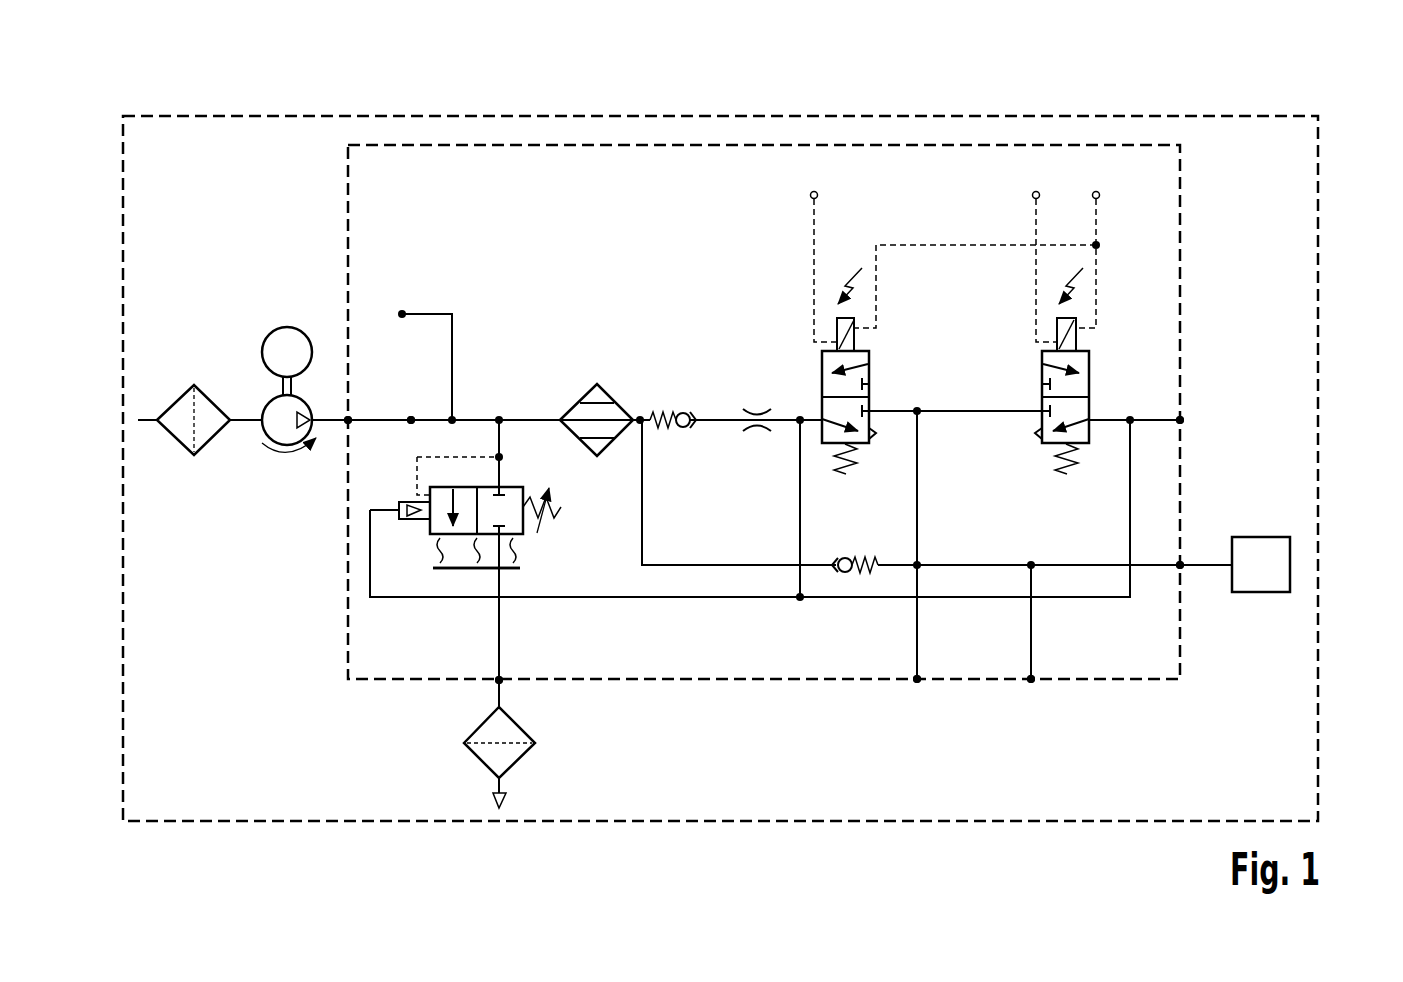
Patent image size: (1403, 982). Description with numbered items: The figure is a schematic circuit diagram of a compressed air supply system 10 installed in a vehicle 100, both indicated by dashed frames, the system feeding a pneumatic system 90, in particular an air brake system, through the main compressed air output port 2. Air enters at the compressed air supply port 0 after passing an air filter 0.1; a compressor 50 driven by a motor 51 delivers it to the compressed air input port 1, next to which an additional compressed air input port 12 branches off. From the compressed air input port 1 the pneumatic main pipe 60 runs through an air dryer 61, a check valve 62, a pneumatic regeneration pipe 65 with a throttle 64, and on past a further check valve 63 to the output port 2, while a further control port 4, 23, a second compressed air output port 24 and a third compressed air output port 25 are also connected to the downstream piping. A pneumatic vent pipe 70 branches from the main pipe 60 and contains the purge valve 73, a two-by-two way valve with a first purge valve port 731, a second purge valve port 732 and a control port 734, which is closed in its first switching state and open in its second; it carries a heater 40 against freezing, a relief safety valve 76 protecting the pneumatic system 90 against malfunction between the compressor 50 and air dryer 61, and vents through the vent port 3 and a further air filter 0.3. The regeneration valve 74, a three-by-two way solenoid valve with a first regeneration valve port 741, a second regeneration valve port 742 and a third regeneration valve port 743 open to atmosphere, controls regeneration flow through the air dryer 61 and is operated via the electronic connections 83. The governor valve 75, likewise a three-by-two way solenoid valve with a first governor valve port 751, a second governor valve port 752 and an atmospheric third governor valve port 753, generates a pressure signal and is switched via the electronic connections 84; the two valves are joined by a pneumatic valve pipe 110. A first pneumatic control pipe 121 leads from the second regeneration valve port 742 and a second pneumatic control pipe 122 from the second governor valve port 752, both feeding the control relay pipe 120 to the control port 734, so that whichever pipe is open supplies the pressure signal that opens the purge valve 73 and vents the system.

The vehicle 100 is at (1196, 82).
The compressed air supply system 10 is at (524, 238).
The air filter 0.1 is at (192, 384).
The compressor 50 is at (260, 398).
The motor 51 is at (287, 327).
The compressed air supply port 0 is at (346, 425).
The additional compressed air input port 12 is at (402, 311).
The compressed air input port 1 is at (411, 416).
The relief safety valve 76 is at (458, 456).
The purge valve 73 is at (500, 454).
The control port 734 is at (396, 508).
The first purge valve port 731 is at (504, 487).
The second purge valve port 732 is at (512, 546).
The heater 40 is at (463, 560).
The pneumatic vent pipe 70 is at (501, 651).
The vent port 3 is at (503, 683).
The further air filter 0.3 is at (522, 760).
The pneumatic main pipe 60 is at (565, 418).
The air dryer 61 is at (605, 386).
The check valve 62 is at (668, 410).
The pneumatic regeneration pipe 65 is at (705, 410).
The throttle 64 is at (752, 406).
The first pneumatic control pipe 121 is at (798, 500).
The control relay pipe 120 is at (655, 600).
The check valve 63 is at (847, 556).
The regeneration valve 74 is at (837, 391).
The first regeneration valve port 741 is at (872, 409).
The second regeneration valve port 742 is at (820, 418).
The third regeneration valve port 743 is at (880, 443).
The governor valve 75 is at (1060, 365).
The first governor valve port 751 is at (1041, 412).
The second governor valve port 752 is at (1091, 412).
The third governor valve port 753 is at (1040, 433).
The electronic connections of the regeneration valve 83 is at (816, 222).
The electronic connections of the governor valve 84 is at (1034, 222).
The pneumatic valve pipe 110 is at (938, 409).
The second pneumatic control pipe 122 is at (1128, 520).
The third compressed air output port 25 is at (919, 683).
The second compressed air output port 24 is at (1033, 683).
The main compressed air output port 2 is at (1183, 562).
The pneumatic system 90 is at (1262, 537).
The further control port 4 is at (1231, 406).
The further control port 23 is at (1183, 418).